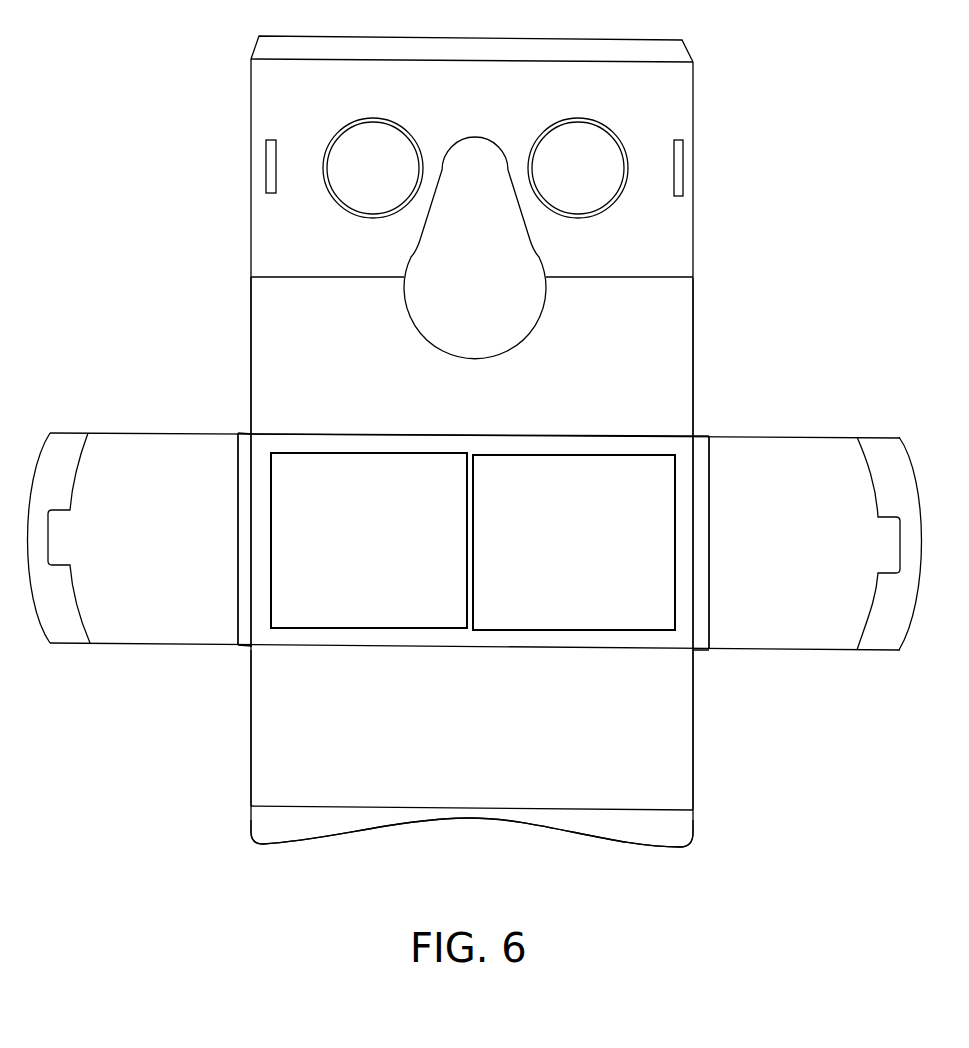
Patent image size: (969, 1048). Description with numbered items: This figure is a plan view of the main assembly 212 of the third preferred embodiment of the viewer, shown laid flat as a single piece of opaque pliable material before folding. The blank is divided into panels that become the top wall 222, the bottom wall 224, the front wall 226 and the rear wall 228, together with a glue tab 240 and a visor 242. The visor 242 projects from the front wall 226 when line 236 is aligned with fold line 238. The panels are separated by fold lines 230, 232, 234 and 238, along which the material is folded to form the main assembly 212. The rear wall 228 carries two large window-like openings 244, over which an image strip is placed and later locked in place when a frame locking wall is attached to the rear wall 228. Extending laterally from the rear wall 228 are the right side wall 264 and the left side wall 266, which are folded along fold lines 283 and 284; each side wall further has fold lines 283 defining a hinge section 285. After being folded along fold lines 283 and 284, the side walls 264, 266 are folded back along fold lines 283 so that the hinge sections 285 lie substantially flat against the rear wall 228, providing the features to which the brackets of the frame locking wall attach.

The main assembly 212 is at (742, 180).
The top wall 222 is at (678, 713).
The bottom wall 224 is at (673, 382).
The front wall 226 is at (665, 233).
The rear wall 228 is at (514, 447).
The fold line 230 is at (667, 278).
The fold line 232 is at (670, 435).
The fold line 234 is at (655, 648).
The line 236 is at (657, 808).
The fold line 238 is at (650, 63).
The glue tab 240 is at (663, 54).
The visor 242 is at (278, 823).
The window-like openings 244 is at (332, 472).
The right side wall 264 is at (833, 450).
The left side wall 266 is at (150, 457).
The fold lines 283 is at (238, 522).
The fold lines 284 is at (708, 467).
The hinge section 285 is at (248, 572).